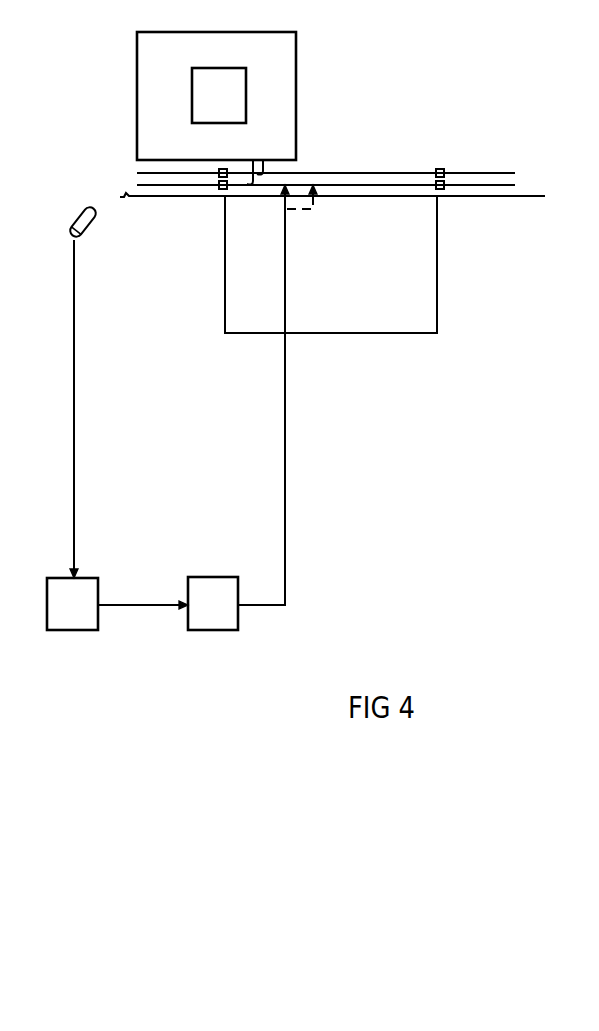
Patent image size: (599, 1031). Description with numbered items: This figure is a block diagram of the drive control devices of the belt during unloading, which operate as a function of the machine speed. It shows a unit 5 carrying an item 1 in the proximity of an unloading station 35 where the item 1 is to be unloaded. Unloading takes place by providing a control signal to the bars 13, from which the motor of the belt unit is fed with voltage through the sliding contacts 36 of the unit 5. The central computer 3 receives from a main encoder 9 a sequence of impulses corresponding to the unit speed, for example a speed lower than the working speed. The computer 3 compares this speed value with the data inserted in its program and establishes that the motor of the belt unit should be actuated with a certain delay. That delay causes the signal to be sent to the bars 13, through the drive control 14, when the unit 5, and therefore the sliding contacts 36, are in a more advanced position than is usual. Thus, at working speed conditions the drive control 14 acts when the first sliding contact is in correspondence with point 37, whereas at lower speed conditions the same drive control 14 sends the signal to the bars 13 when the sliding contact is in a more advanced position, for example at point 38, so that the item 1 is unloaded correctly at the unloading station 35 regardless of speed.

The item 1 is at (219, 95).
The central computer 3 is at (117, 604).
The unit 5 is at (288, 58).
The main encoder 9 is at (72, 212).
The bars 13 is at (408, 172).
The drive control 14 is at (213, 603).
The unloading station 35 is at (420, 318).
The sliding contacts 36 is at (262, 172).
The point 37 is at (287, 178).
The point 38 is at (313, 178).